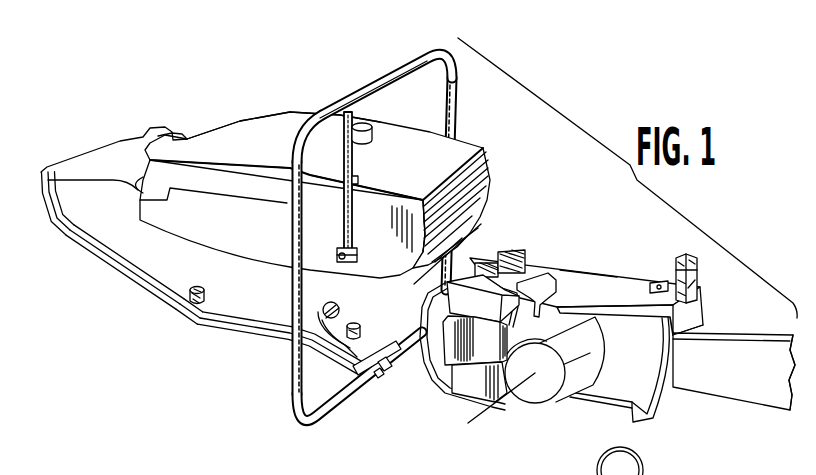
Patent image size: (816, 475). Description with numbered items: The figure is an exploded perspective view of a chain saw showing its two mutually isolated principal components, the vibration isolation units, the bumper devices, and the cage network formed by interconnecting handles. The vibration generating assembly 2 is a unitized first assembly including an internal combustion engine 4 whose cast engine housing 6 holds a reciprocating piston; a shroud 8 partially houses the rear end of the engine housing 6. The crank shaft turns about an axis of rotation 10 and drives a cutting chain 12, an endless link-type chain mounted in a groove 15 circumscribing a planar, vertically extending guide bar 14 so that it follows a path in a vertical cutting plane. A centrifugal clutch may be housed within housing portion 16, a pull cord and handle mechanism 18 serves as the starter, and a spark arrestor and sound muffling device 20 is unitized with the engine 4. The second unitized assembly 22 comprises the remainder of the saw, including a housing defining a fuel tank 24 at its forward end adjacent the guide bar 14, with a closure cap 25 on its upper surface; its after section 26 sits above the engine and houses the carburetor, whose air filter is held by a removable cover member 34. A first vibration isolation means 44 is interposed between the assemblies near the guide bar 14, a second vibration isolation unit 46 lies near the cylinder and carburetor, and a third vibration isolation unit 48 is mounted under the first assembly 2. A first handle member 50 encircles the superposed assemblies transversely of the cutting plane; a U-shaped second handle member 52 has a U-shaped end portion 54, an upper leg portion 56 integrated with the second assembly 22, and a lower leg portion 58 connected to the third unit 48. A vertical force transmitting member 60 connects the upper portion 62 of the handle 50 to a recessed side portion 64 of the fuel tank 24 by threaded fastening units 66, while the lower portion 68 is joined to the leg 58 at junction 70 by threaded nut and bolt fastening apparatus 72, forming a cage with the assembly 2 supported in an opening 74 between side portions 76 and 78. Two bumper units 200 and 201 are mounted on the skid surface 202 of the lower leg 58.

The vibration generating assembly 2 is at (617, 274).
The internal combustion engine 4 is at (443, 375).
The engine housing 6 is at (637, 278).
The shroud 8 is at (430, 355).
The axis of rotation 10 is at (428, 464).
The cutting chain 12 is at (726, 332).
The guide bar 14 is at (735, 378).
The groove 15 is at (757, 333).
The housing portion 16 is at (535, 404).
The pull cord and handle mechanism 18 is at (548, 263).
The spark arrestor and sound muffling device 20 is at (473, 388).
The second unitized assembly 22 is at (322, 104).
The fuel tank 24 is at (483, 175).
The closure cap 25 is at (364, 128).
The after section 26 is at (212, 226).
The removable cover member 34 is at (243, 118).
The first vibration isolation means 44 is at (698, 276).
The second vibration isolation unit 46 is at (528, 248).
The third vibration isolation unit 48 is at (336, 304).
The first handle member 50 is at (414, 60).
The second handle member 52 is at (74, 253).
The U-shaped end portion 54 is at (42, 216).
The upper leg portion 56 is at (93, 160).
The lower leg portion 58 is at (160, 312).
The force transmitting member 60 is at (353, 160).
The upper portion of handle 62 is at (306, 128).
The recessed side portion 64 is at (358, 180).
The threaded fastening units 66 is at (339, 257).
The lower portion of handle 68 is at (330, 413).
The junction 70 is at (384, 378).
The threaded nut and bolt fastening apparatus 72 is at (367, 382).
The opening 74 is at (470, 236).
The side portion of handle 76 is at (291, 386).
The side portion of handle 78 is at (448, 98).
The bumper unit 200 is at (202, 292).
The bumper unit 201 is at (355, 322).
The surface 202 is at (242, 312).